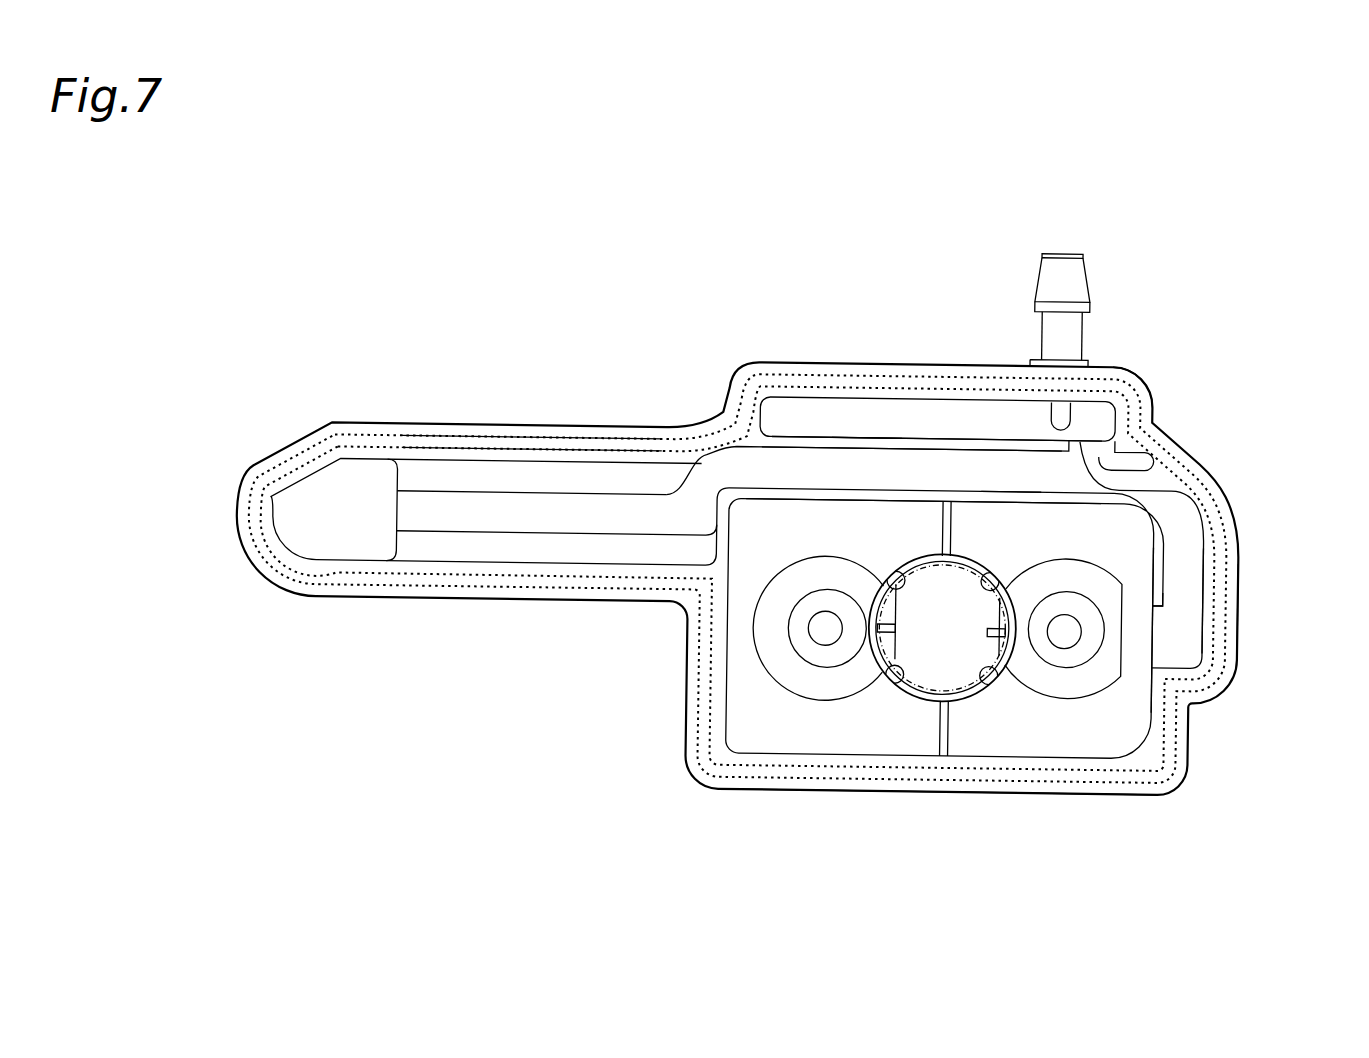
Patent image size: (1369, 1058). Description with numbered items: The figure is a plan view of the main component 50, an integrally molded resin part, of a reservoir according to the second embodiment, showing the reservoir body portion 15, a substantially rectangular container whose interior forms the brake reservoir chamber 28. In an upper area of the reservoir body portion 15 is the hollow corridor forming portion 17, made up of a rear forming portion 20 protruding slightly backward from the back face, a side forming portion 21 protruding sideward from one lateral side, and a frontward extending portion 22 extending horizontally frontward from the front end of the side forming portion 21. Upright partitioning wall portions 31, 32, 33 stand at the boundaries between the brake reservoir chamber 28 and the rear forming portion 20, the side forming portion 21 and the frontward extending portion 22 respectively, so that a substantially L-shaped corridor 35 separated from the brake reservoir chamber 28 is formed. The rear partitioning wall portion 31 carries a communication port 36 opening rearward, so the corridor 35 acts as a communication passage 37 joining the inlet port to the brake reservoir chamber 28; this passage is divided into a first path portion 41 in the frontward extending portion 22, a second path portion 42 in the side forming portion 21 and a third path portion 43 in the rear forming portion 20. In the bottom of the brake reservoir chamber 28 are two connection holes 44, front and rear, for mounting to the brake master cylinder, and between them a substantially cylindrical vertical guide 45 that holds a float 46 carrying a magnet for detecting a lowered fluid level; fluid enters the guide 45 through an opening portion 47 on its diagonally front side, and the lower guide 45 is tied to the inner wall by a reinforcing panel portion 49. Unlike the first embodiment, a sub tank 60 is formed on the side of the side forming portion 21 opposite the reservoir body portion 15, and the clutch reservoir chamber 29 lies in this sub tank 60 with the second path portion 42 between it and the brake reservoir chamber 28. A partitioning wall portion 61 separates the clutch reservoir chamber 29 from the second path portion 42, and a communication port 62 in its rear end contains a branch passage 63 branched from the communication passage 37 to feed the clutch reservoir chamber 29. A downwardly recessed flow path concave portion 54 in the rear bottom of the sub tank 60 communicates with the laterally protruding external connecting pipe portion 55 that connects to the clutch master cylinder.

The reservoir body portion 15 is at (888, 797).
The corridor forming portion 17 is at (588, 420).
The rear forming portion 20 is at (1239, 650).
The side forming portion 21 is at (871, 433).
The frontward extending portion 22 is at (445, 429).
The brake reservoir chamber 28 is at (752, 706).
The clutch reservoir chamber 29 is at (928, 417).
The partitioning wall portion 31 is at (1168, 582).
The partitioning wall portion 32 is at (1007, 491).
The partitioning wall portion 33 is at (727, 535).
The corridor 35 is at (793, 462).
The communication port 36 is at (1163, 607).
The communication passage 37 is at (659, 511).
The first path portion 41 is at (519, 513).
The second path portion 42 is at (829, 465).
The third path portion 43 is at (1181, 544).
The connection holes 44 is at (822, 628).
The guide 45 is at (977, 700).
The float 46 is at (917, 690).
The opening portion 47 is at (897, 570).
The reinforcing panel portion 49 is at (958, 495).
The main component 50 is at (1228, 373).
The flow path concave portion 54 is at (1057, 419).
The external connecting pipe portion 55 is at (1069, 281).
The sub tank 60 is at (1120, 371).
The partitioning wall portion 61 is at (866, 471).
The communication port 62 is at (1148, 465).
The branch passage 63 is at (1163, 487).